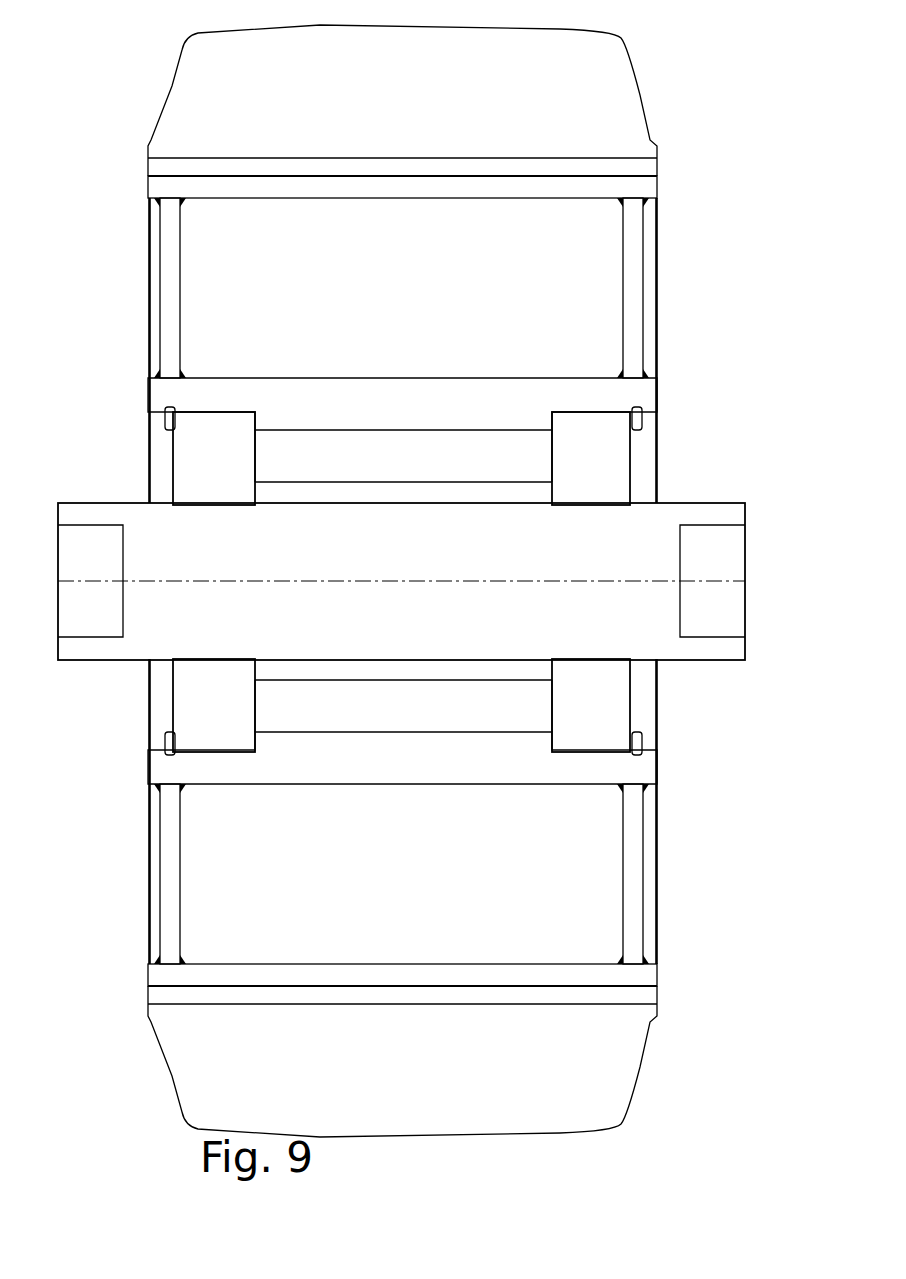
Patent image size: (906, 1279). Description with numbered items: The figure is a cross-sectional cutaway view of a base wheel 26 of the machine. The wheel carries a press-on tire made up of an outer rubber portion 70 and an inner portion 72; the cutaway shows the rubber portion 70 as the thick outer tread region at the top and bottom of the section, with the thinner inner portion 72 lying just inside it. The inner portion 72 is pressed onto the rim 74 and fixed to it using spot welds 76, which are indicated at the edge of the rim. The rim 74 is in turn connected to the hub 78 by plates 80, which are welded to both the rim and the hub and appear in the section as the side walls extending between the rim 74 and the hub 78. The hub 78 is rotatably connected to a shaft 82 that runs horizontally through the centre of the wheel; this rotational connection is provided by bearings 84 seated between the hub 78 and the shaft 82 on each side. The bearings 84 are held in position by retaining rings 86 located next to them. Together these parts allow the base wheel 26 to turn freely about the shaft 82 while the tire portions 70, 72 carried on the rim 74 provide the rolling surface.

The base wheel 26 is at (706, 244).
The rubber portion 70 is at (172, 86).
The inner portion 72 is at (158, 166).
The rim 74 is at (155, 188).
The spot welds 76 is at (660, 178).
The hub 78 is at (150, 392).
The plates 80 is at (165, 289).
The shaft 82 is at (748, 503).
The bearings 84 is at (625, 470).
The retaining rings 86 is at (640, 421).